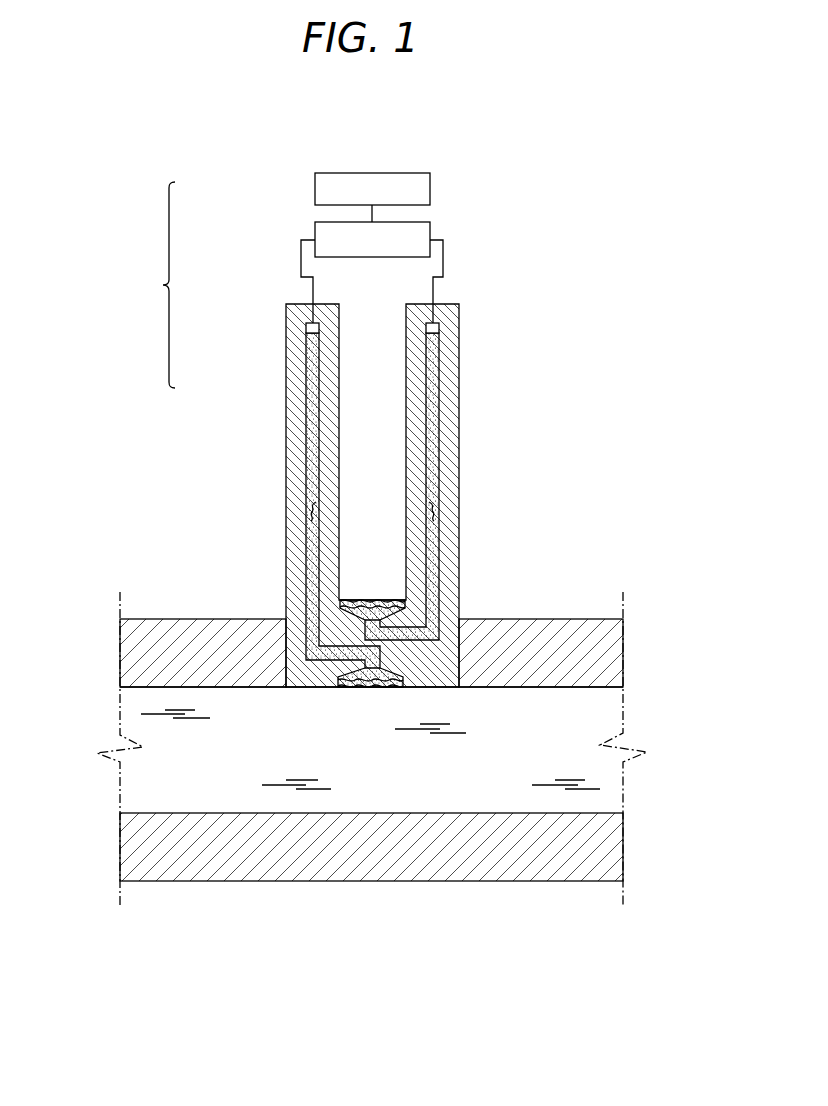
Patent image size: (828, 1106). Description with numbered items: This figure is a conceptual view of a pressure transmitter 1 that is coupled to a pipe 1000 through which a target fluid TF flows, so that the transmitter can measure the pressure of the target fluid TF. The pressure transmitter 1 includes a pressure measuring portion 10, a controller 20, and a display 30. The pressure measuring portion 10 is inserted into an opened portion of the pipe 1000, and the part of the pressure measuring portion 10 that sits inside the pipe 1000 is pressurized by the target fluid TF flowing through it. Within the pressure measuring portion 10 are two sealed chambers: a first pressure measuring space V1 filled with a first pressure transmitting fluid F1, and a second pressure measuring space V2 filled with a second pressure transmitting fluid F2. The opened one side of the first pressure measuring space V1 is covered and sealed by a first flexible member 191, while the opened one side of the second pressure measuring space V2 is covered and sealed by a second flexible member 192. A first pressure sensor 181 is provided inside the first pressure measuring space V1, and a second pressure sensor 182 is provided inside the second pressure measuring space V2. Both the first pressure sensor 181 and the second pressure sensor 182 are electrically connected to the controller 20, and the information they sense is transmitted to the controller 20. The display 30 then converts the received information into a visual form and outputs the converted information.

The pressure transmitter 1 is at (161, 285).
The pressure measuring portion 10 is at (284, 372).
The controller 20 is at (313, 230).
The display 30 is at (313, 188).
The first pressure sensor 181 is at (308, 327).
The second pressure sensor 182 is at (438, 327).
The first flexible member 191 is at (345, 674).
The second flexible member 192 is at (405, 602).
The first pressure transmitting fluid F1 is at (308, 460).
The second pressure transmitting fluid F2 is at (438, 460).
The first pressure measuring space V1 is at (311, 512).
The second pressure measuring space V2 is at (434, 512).
The target fluid TF is at (580, 714).
The pipe 1000 is at (322, 883).